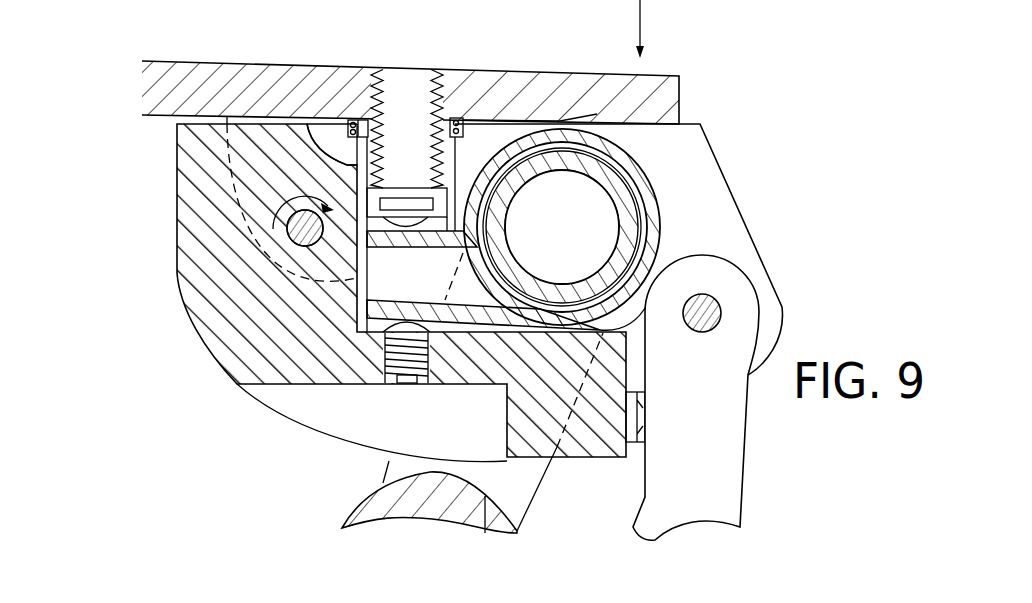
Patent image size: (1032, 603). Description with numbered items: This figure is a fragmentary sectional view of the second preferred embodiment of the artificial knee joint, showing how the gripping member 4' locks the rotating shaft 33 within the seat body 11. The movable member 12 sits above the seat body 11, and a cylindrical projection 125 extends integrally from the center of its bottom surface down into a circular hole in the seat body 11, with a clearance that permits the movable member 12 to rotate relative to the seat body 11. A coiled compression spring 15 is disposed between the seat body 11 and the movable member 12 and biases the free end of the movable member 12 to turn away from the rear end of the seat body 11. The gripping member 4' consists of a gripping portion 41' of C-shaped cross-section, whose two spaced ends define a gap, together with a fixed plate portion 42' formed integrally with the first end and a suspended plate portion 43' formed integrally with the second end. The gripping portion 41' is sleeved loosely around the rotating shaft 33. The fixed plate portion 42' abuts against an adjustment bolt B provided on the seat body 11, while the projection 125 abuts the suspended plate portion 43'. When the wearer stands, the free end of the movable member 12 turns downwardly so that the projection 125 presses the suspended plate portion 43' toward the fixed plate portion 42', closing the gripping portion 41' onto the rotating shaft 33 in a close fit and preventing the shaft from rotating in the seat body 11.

The seat body 11 is at (186, 333).
The movable member 12 is at (126, 97).
The cylindrical projection 125 is at (340, 157).
The coiled compression spring 15 is at (352, 120).
The gripping member 4' is at (421, 166).
The suspended plate portion 43' is at (422, 265).
The fixed plate portion 42' is at (406, 351).
The rotating shaft 33 is at (553, 160).
The gripping portion 41' is at (629, 332).
The adjustment bolt B is at (418, 370).